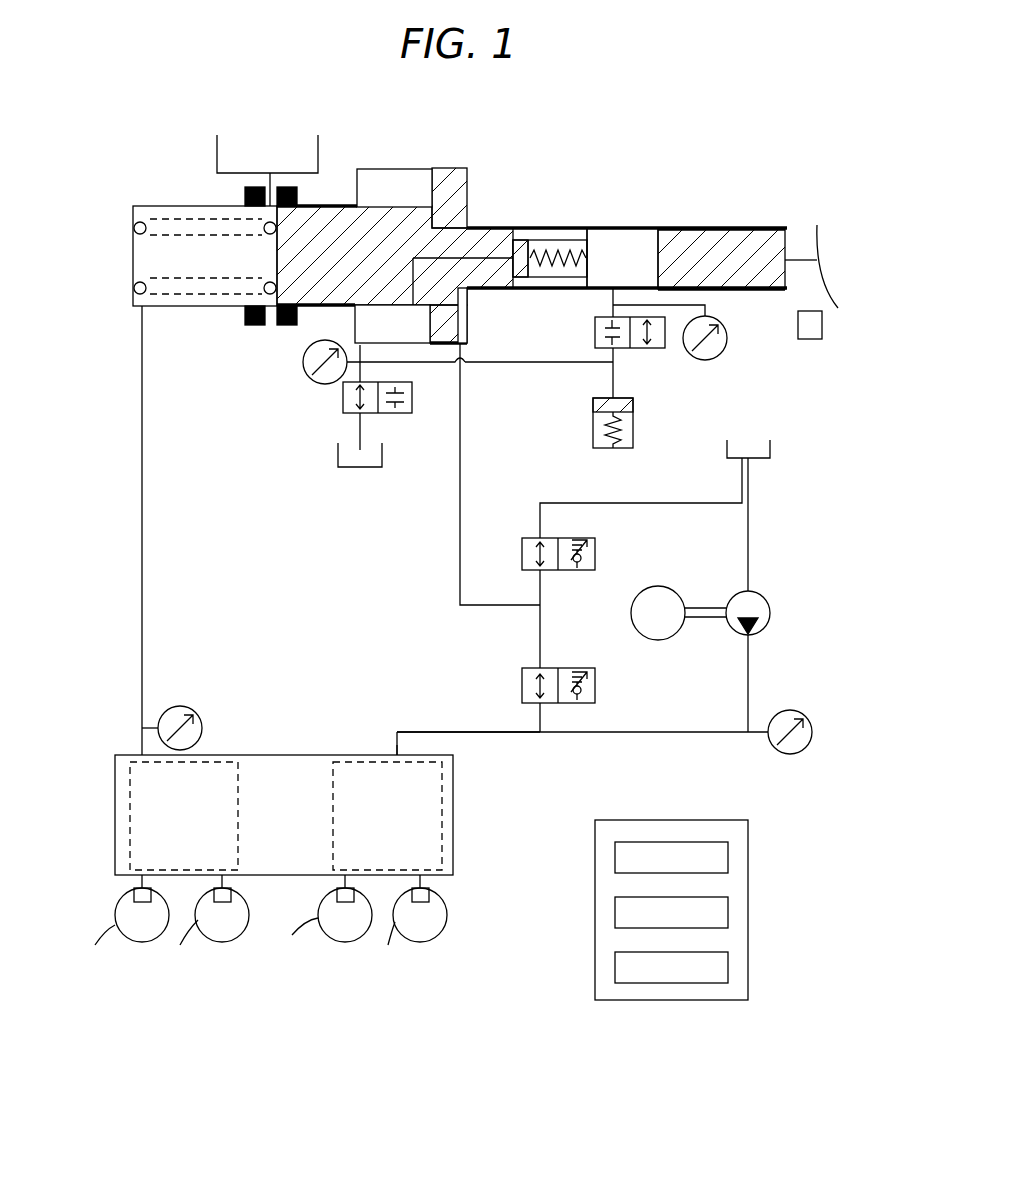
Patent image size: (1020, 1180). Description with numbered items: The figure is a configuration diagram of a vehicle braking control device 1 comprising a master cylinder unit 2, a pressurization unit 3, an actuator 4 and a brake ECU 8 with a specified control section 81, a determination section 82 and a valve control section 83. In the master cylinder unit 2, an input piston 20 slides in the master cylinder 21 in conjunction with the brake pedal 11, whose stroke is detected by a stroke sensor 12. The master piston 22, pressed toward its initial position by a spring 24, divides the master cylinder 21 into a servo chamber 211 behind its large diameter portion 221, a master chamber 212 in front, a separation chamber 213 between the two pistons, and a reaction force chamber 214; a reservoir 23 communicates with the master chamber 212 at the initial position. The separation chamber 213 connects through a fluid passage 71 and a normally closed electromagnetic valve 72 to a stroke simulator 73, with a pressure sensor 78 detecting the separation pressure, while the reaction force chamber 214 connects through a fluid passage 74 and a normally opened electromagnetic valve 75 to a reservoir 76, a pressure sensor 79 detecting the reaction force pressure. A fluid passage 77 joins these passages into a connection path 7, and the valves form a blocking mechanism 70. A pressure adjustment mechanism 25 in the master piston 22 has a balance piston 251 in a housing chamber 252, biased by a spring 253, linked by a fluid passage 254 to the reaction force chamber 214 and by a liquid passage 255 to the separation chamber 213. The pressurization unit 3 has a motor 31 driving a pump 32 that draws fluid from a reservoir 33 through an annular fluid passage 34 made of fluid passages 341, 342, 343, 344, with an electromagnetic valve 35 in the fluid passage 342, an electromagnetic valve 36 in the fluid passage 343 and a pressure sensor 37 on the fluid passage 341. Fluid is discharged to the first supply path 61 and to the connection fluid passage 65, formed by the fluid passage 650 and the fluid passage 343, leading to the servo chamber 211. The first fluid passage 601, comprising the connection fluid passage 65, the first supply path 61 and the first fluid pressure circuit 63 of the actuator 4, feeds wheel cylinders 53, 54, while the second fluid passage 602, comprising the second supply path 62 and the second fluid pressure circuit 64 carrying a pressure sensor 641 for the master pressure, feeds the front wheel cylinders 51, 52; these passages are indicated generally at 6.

The braking control device 1 is at (106, 129).
The master cylinder unit 2 is at (115, 192).
The pressurization unit 3 is at (824, 476).
The actuator 4 is at (116, 782).
The hydraulic circuit 6 is at (110, 647).
The connection path 7 is at (425, 368).
The brake ECU 8 is at (595, 860).
The brake pedal 11 is at (836, 288).
The stroke sensor 12 is at (816, 338).
The input piston 20 is at (740, 228).
The master cylinder 21 is at (133, 272).
The master piston 22 is at (340, 206).
The reservoir 23 is at (217, 152).
The spring 24 is at (192, 298).
The pressure adjustment mechanism 25 is at (535, 240).
The motor 31 is at (668, 588).
The pump 32 is at (770, 613).
The reservoir 33 is at (772, 446).
The annular fluid passage 34 is at (748, 665).
The electromagnetic valve 35 is at (520, 555).
The electromagnetic valve 36 is at (520, 686).
The pressure sensor 37 is at (812, 732).
The wheel cylinder 51 is at (137, 905).
The wheel cylinder 52 is at (222, 905).
The wheel cylinder 53 is at (340, 905).
The wheel cylinder 54 is at (425, 905).
The first supply path 61 is at (468, 735).
The second supply path 62 is at (140, 554).
The first fluid pressure circuit 63 is at (362, 754).
The second fluid pressure circuit 64 is at (128, 822).
The connection fluid passage 65 is at (460, 516).
The blocking mechanism 70 is at (685, 399).
The fluid passage 71 is at (613, 380).
The electromagnetic valve 72 is at (597, 330).
The stroke simulator 73 is at (594, 425).
The fluid passage 74 is at (359, 427).
The electromagnetic valve 75 is at (390, 416).
The reservoir 76 is at (338, 465).
The fluid passage 77 is at (485, 365).
The pressure sensor 78 is at (718, 352).
The pressure sensor 79 is at (303, 360).
The specified control section 81 is at (728, 855).
The determination section 82 is at (728, 910).
The valve control section 83 is at (728, 965).
The servo chamber 211 is at (465, 338).
The master chamber 212 is at (133, 236).
The separation chamber 213 is at (640, 240).
The reaction force chamber 214 is at (395, 185).
The large diameter portion 221 is at (448, 185).
The balance piston 251 is at (525, 240).
The housing chamber 252 is at (560, 240).
The spring 253 is at (545, 265).
The fluid passage 254 is at (397, 283).
The liquid passage 255 is at (582, 260).
The fluid passage 341 is at (632, 735).
The fluid passage 342 is at (620, 503).
The fluid passage 343 is at (538, 640).
The fluid passage 344 is at (748, 532).
The first fluid passage 601 is at (409, 713).
The second fluid passage 602 is at (140, 420).
The pressure sensor 641 is at (198, 722).
The fluid passage 650 is at (460, 576).